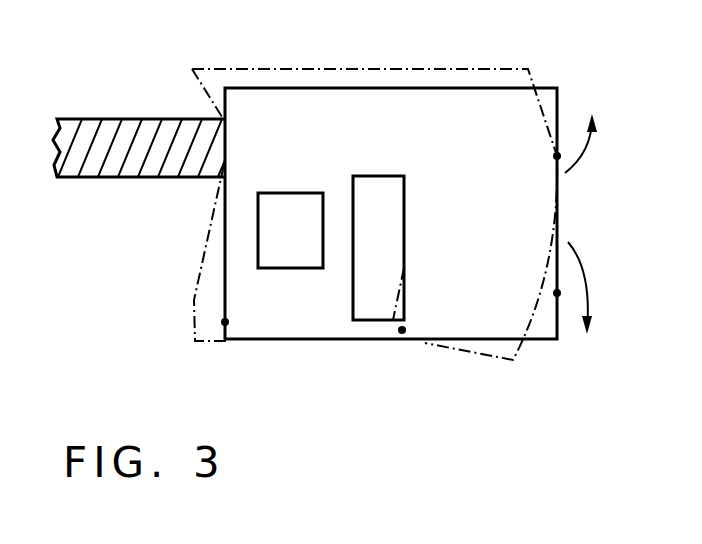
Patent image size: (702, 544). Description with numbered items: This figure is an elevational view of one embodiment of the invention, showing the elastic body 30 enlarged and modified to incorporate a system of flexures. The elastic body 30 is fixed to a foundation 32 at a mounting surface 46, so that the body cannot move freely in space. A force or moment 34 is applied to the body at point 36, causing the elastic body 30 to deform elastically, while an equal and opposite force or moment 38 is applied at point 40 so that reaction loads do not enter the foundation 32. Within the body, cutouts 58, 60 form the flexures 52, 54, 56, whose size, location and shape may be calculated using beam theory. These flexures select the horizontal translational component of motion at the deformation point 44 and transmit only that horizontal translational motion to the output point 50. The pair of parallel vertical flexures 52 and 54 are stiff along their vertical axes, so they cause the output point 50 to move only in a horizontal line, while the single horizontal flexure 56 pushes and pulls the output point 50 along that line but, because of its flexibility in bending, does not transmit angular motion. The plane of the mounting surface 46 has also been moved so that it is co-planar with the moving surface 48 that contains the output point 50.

The elastic body 30 is at (448, 113).
The foundation 32 is at (100, 133).
The force or moment 34 is at (590, 297).
The point 36 is at (557, 293).
The equal and opposite force or moment 38 is at (590, 152).
The point 40 is at (557, 156).
The deformation point 44 is at (402, 330).
The mounting surface 46 is at (222, 156).
The moving surface 48 is at (225, 293).
The output point 50 is at (225, 322).
The vertical flexure 52 is at (243, 232).
The vertical flexure 54 is at (343, 238).
The horizontal flexure 56 is at (385, 327).
The cutout 58 is at (308, 233).
The cutout 60 is at (398, 220).